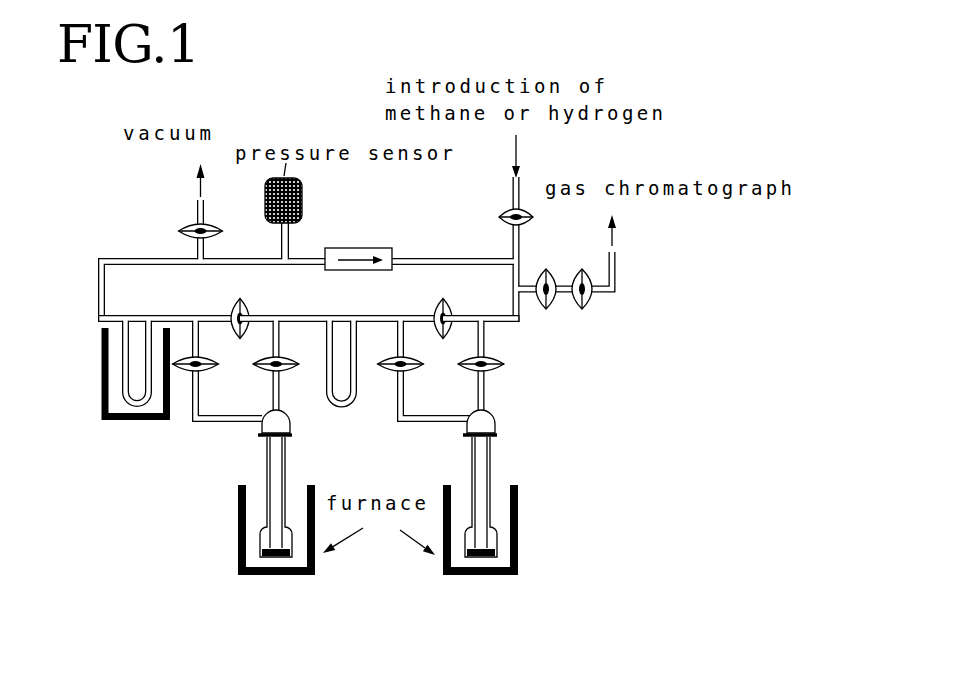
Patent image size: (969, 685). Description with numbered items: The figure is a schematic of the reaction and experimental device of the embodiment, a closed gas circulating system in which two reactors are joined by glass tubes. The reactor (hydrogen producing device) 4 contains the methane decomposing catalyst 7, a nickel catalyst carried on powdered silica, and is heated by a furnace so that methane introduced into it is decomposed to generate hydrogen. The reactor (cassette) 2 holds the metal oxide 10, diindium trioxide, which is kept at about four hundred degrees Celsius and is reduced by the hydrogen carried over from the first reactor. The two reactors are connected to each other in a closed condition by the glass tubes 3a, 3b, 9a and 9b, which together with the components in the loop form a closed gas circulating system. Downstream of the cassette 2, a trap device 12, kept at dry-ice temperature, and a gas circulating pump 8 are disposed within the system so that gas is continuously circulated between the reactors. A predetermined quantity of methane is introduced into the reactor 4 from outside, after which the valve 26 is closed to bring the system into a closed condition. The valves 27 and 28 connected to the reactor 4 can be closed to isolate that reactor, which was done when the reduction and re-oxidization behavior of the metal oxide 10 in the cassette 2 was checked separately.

The valve 26 is at (504, 241).
The gas circulating pump 8 is at (390, 215).
The glass tube 9a is at (173, 304).
The glass tube 9b is at (285, 294).
The glass tube 3a is at (509, 366).
The glass tube 3b is at (391, 341).
The valve 27 is at (513, 372).
The valve 28 is at (418, 394).
The trap device 12 is at (133, 391).
The metal oxide 10 is at (151, 483).
The reactor (cassette) 2 is at (257, 534).
The reactor (hydrogen producing device) 4 is at (500, 541).
The methane decomposing catalyst 7 is at (643, 483).